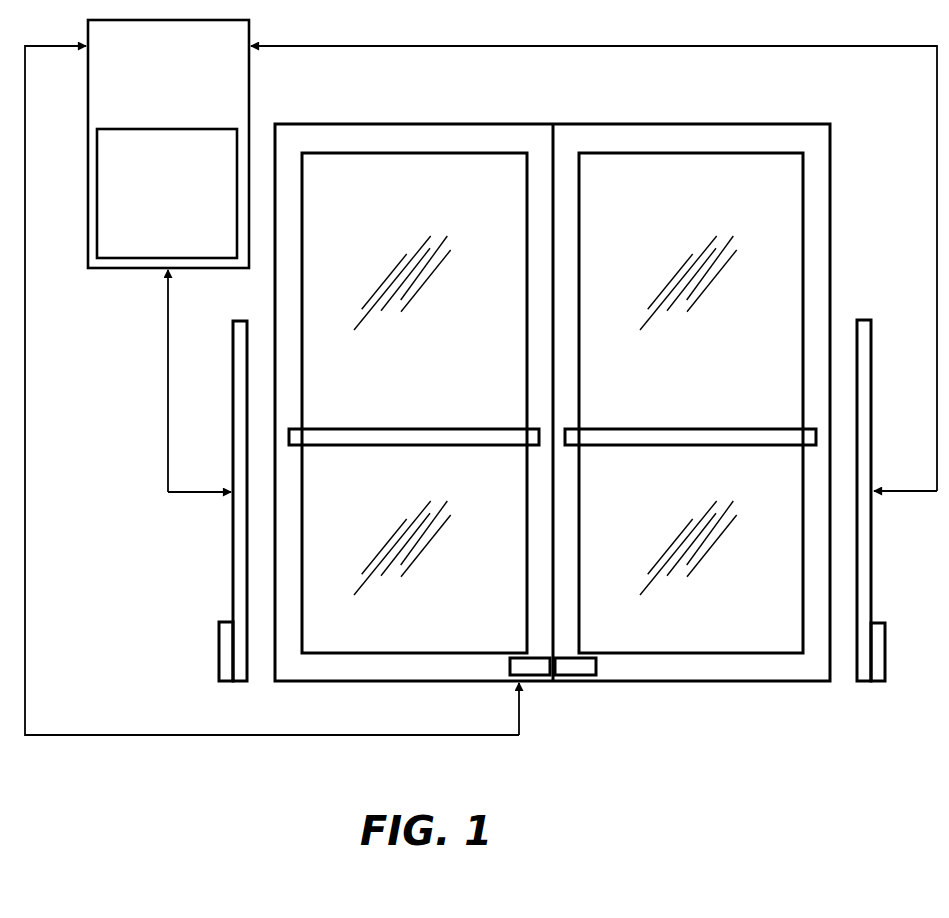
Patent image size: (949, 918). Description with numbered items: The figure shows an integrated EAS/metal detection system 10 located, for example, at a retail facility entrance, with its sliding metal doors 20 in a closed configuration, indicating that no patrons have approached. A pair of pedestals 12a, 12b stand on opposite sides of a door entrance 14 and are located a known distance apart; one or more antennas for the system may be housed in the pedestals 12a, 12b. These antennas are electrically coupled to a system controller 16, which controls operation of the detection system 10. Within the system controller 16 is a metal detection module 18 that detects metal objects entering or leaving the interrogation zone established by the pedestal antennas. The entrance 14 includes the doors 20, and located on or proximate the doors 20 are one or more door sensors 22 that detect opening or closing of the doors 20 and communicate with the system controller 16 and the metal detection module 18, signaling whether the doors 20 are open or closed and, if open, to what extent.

The integrated EAS/metal detection system 10 is at (803, 30).
The pedestal 12a is at (232, 375).
The pedestal 12b is at (872, 368).
The door entrance 14 is at (831, 143).
The system controller 16 is at (155, 116).
The metal detection module 18 is at (154, 250).
The sliding metal doors 20 is at (625, 208).
The door sensors 22 is at (583, 670).